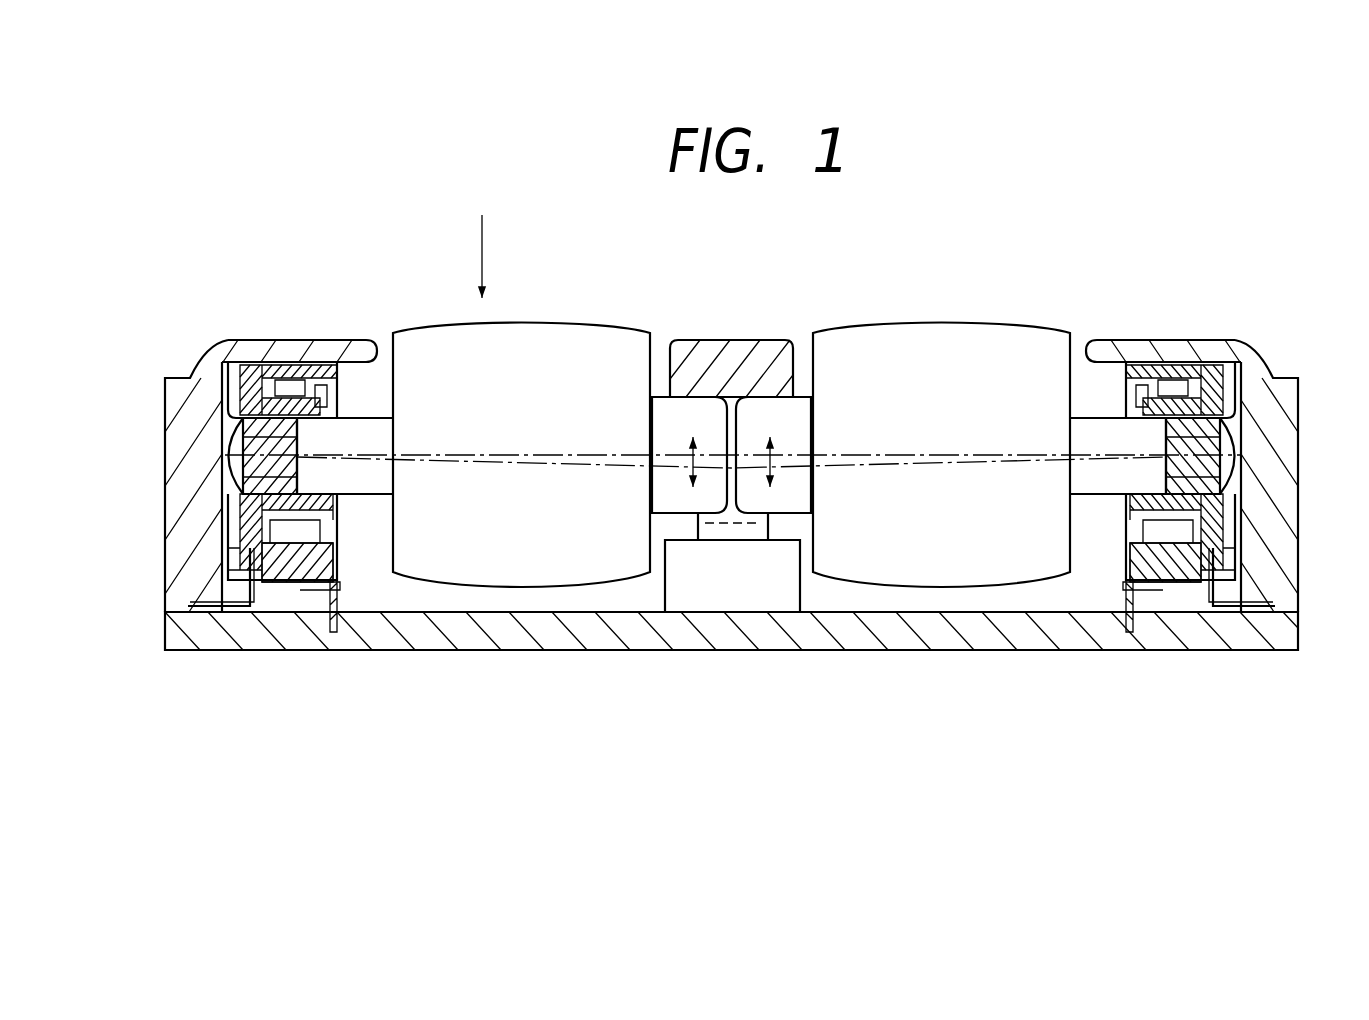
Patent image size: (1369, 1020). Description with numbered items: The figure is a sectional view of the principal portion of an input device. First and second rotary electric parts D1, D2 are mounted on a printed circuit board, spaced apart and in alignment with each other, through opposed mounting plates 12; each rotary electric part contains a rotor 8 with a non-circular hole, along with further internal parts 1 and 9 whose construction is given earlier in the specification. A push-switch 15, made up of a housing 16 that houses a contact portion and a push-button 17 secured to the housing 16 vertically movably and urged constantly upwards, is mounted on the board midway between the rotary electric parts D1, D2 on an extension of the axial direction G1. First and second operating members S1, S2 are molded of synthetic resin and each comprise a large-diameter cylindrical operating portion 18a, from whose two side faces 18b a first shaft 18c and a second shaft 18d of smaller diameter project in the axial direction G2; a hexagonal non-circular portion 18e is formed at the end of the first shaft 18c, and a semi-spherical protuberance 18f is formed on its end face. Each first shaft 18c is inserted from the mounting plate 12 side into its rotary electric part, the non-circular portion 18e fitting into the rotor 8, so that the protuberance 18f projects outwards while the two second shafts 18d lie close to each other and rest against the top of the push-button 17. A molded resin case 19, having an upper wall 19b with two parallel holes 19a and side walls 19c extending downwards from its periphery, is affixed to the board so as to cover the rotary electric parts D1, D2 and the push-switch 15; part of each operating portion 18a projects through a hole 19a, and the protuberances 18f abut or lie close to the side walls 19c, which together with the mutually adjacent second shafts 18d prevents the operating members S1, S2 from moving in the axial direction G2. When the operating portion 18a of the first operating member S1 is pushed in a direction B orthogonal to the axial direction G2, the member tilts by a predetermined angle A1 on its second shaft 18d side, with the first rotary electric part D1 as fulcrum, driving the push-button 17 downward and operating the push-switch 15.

The bearing housing 1 is at (232, 380).
The rotor 8 is at (222, 372).
The bearing 9 is at (731, 484).
The mounting plate 12 is at (333, 585).
The push-switch 15 is at (700, 598).
The housing 16 is at (780, 598).
The push-button 17 is at (770, 535).
The operating portion 18a is at (731, 465).
The side faces 18b is at (368, 482).
The first shaft 18c is at (358, 578).
The second shaft 18d is at (710, 467).
The non-circular portion 18e is at (258, 423).
The protuberance 18f is at (235, 462).
The case 19 is at (722, 414).
The holes 19a is at (662, 340).
The upper wall 19b is at (305, 345).
The side walls 19c is at (178, 545).
The first operating member S1 is at (605, 322).
The second operating member S2 is at (878, 322).
The first rotary electric part D1 is at (342, 395).
The second rotary electric part D2 is at (1122, 383).
The axial direction G1 is at (598, 455).
The axial direction G2 is at (773, 455).
The predetermined angle A1 is at (729, 446).
The direction B is at (481, 240).